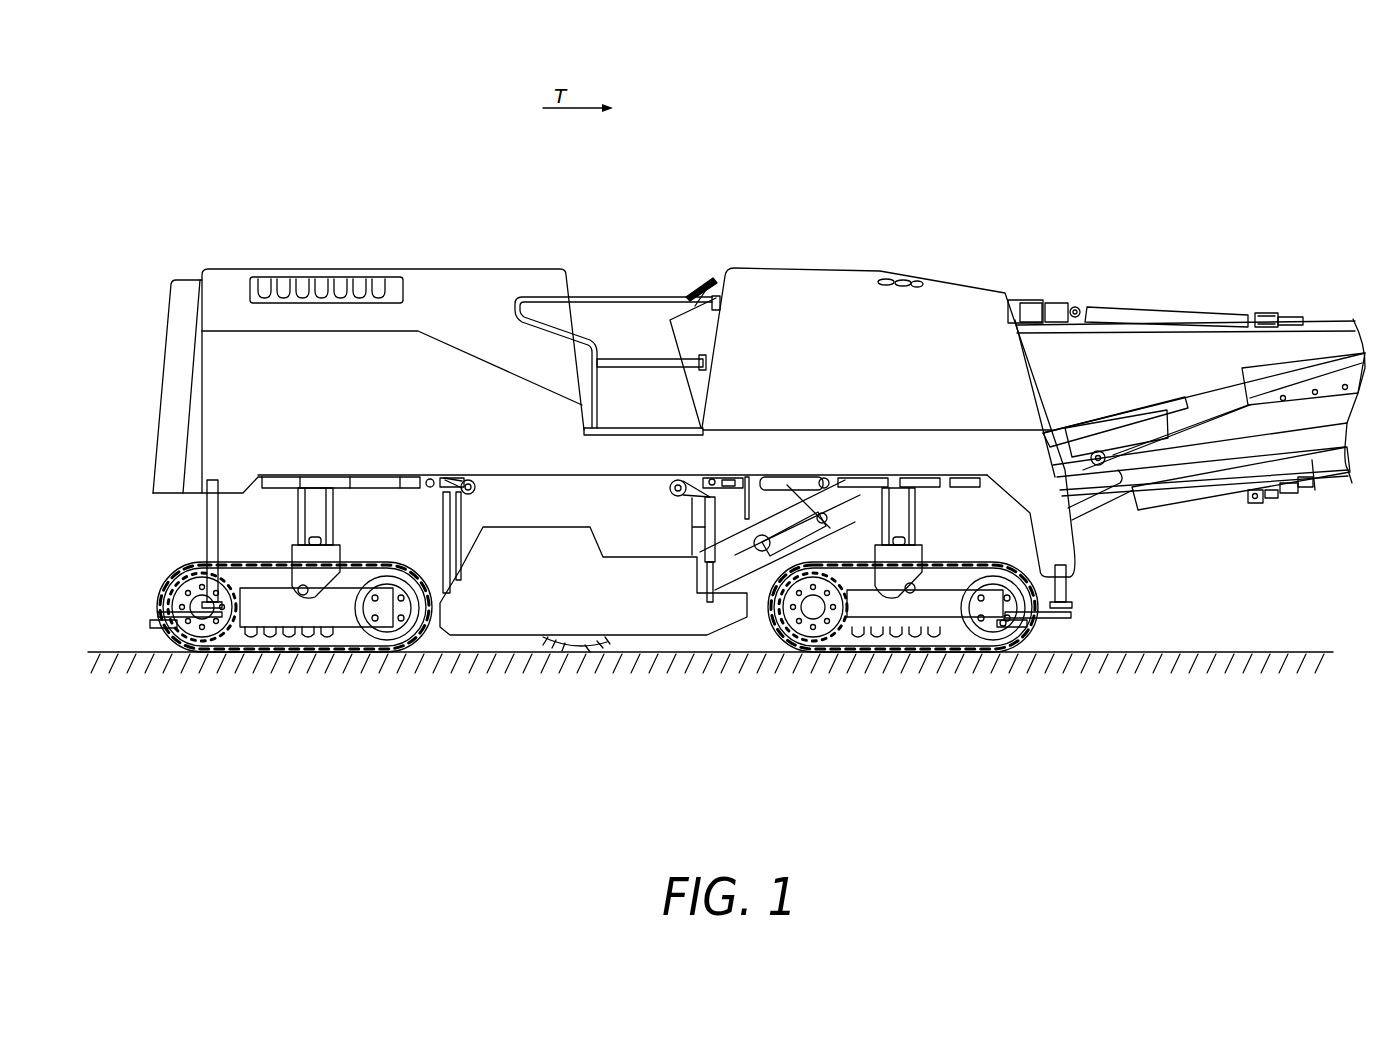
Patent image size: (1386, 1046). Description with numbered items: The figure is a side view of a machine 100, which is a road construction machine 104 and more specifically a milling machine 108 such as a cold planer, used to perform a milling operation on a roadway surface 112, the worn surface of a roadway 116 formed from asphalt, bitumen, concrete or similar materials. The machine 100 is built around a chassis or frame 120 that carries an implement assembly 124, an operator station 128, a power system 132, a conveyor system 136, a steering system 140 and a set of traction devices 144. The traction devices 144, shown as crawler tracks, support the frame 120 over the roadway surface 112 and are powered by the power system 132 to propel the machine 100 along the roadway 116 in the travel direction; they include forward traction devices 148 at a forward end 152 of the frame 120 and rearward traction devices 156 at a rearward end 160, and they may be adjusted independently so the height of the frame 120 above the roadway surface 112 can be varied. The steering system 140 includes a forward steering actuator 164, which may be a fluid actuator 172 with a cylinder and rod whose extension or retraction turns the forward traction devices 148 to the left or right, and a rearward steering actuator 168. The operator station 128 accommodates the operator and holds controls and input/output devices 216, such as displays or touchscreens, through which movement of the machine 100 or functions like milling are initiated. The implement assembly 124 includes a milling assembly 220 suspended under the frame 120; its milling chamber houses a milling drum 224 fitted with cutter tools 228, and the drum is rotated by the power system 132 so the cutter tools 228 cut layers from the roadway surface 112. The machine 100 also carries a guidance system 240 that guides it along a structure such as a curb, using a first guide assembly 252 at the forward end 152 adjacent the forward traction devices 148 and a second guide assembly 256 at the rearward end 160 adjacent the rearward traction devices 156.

The machine 100 is at (180, 206).
The road construction machine 104 is at (207, 170).
The milling machine 108 is at (1112, 190).
The roadway surface 112 is at (1193, 652).
The roadway 116 is at (1270, 648).
The frame 120 is at (1073, 540).
The implement assembly 124 is at (490, 660).
The operator station 128 is at (629, 262).
The power system 132 is at (220, 389).
The conveyor system 136 is at (1245, 505).
The steering system 140 is at (850, 515).
The traction devices 144 is at (163, 590).
The forward traction devices 148 is at (770, 655).
The forward end 152 is at (1170, 578).
The rearward traction devices 156 is at (163, 590).
The rearward end 160 is at (132, 512).
The forward steering actuator 164 is at (880, 528).
The rearward steering actuator 168 is at (405, 488).
The fluid actuator 172 is at (880, 528).
The input/output devices 216 is at (673, 300).
The milling assembly 220 is at (468, 660).
The milling drum 224 is at (553, 652).
The cutter tools 228 is at (590, 650).
The guidance system 240 is at (1082, 605).
The first guide assembly 252 is at (1065, 625).
The second guide assembly 256 is at (217, 655).